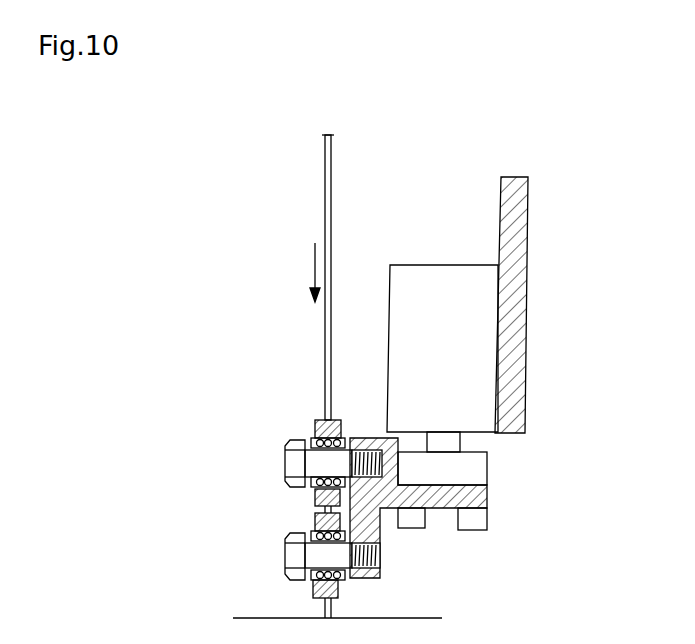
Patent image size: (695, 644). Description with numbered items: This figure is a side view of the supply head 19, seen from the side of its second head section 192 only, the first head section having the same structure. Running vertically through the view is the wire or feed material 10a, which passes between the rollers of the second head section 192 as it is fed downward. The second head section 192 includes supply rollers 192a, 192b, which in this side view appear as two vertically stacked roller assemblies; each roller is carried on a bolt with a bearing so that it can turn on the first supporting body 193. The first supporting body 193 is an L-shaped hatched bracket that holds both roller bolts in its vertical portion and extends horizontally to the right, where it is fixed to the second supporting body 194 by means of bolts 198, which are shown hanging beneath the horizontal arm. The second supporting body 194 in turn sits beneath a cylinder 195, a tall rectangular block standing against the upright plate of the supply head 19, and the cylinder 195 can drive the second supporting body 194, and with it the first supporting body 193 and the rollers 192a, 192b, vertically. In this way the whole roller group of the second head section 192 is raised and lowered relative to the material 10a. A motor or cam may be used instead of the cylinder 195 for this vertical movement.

The wire 10a is at (332, 190).
The supply head 19 is at (580, 208).
The second head section 192 is at (266, 412).
The supply roller 192a is at (317, 494).
The supply roller 192b is at (313, 593).
The first supporting body 193 is at (488, 497).
The second supporting body 194 is at (488, 470).
The cylinder 195 is at (416, 272).
The bolts 198 is at (420, 528).